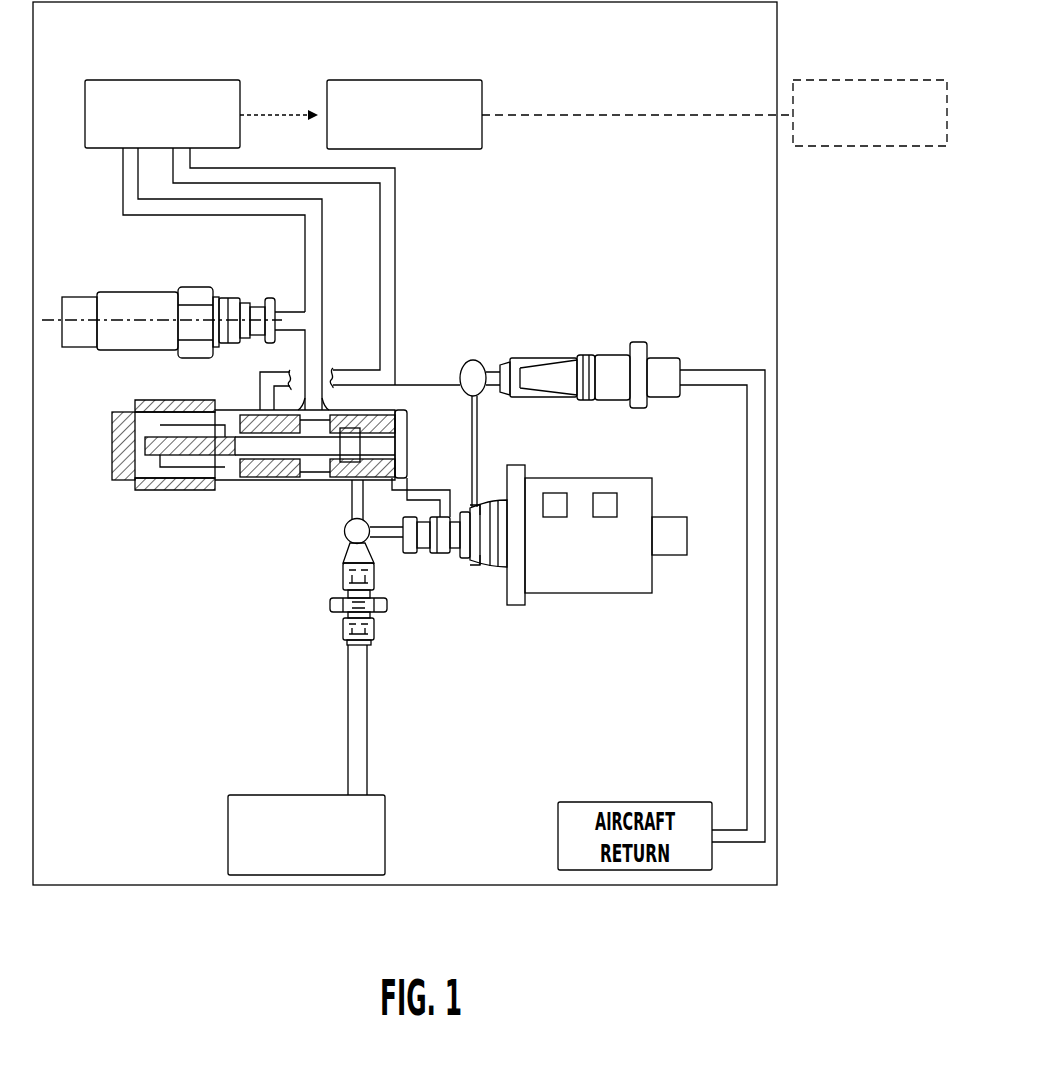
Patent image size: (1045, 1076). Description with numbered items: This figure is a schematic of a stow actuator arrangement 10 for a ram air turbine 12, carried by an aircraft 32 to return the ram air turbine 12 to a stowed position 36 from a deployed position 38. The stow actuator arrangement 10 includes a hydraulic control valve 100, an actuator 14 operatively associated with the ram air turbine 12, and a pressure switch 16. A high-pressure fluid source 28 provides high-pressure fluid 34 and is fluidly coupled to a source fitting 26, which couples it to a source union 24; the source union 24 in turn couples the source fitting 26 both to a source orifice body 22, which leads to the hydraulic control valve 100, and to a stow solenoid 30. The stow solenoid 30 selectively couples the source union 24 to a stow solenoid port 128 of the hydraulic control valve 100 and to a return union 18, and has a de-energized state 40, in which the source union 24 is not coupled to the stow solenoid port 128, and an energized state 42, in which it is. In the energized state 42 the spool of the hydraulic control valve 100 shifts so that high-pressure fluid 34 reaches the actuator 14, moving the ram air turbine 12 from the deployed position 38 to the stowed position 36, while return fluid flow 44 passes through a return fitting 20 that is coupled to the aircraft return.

The stow actuator arrangement 10 is at (176, 734).
The ram air turbine 12 is at (407, 80).
The actuator 14 is at (186, 80).
The pressure switch 16 is at (117, 300).
The return union 18 is at (480, 362).
The return fitting 20 is at (560, 375).
The source orifice body 22 is at (354, 502).
The source union 24 is at (343, 535).
The source fitting 26 is at (343, 583).
The high-pressure fluid source 28 is at (385, 795).
The stow solenoid 30 is at (605, 577).
The aircraft 32 is at (117, 885).
The high-pressure fluid 34 is at (357, 727).
The stowed position 36 is at (440, 160).
The deployed position 38 is at (863, 160).
The de-energized state 40 is at (555, 493).
The energized state 42 is at (608, 493).
The return fluid flow 44 is at (455, 355).
The hydraulic control valve 100 is at (187, 500).
The stow solenoid port 128 is at (400, 452).